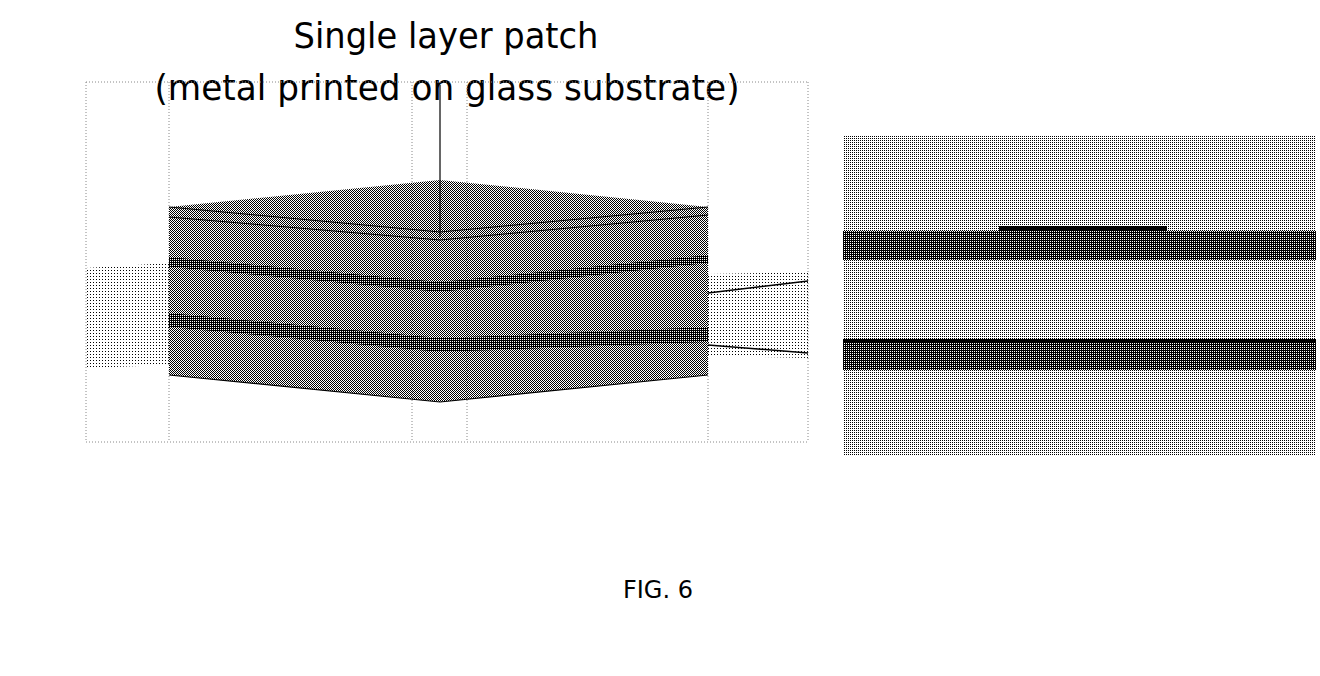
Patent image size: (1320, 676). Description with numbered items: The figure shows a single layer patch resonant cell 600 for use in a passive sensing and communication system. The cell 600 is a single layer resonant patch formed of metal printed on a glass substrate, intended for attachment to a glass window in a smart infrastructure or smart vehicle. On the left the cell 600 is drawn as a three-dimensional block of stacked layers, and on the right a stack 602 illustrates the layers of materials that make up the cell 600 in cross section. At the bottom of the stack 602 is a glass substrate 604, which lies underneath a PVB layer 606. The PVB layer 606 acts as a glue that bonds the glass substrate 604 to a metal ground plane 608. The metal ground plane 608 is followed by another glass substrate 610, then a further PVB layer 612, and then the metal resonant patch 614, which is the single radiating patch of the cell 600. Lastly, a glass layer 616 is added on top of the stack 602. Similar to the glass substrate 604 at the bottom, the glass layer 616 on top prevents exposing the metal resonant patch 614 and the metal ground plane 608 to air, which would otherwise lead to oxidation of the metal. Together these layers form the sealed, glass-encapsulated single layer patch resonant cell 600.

The cell 600 is at (190, 207).
The stack 602 is at (1056, 261).
The glass substrate 604 is at (857, 432).
The PVB layer 606 is at (857, 362).
The metal ground plane 608 is at (925, 340).
The glass substrate 610 is at (857, 280).
The PVB layer 612 is at (933, 245).
The metal resonant patch 614 is at (1020, 228).
The glass layer 616 is at (857, 170).